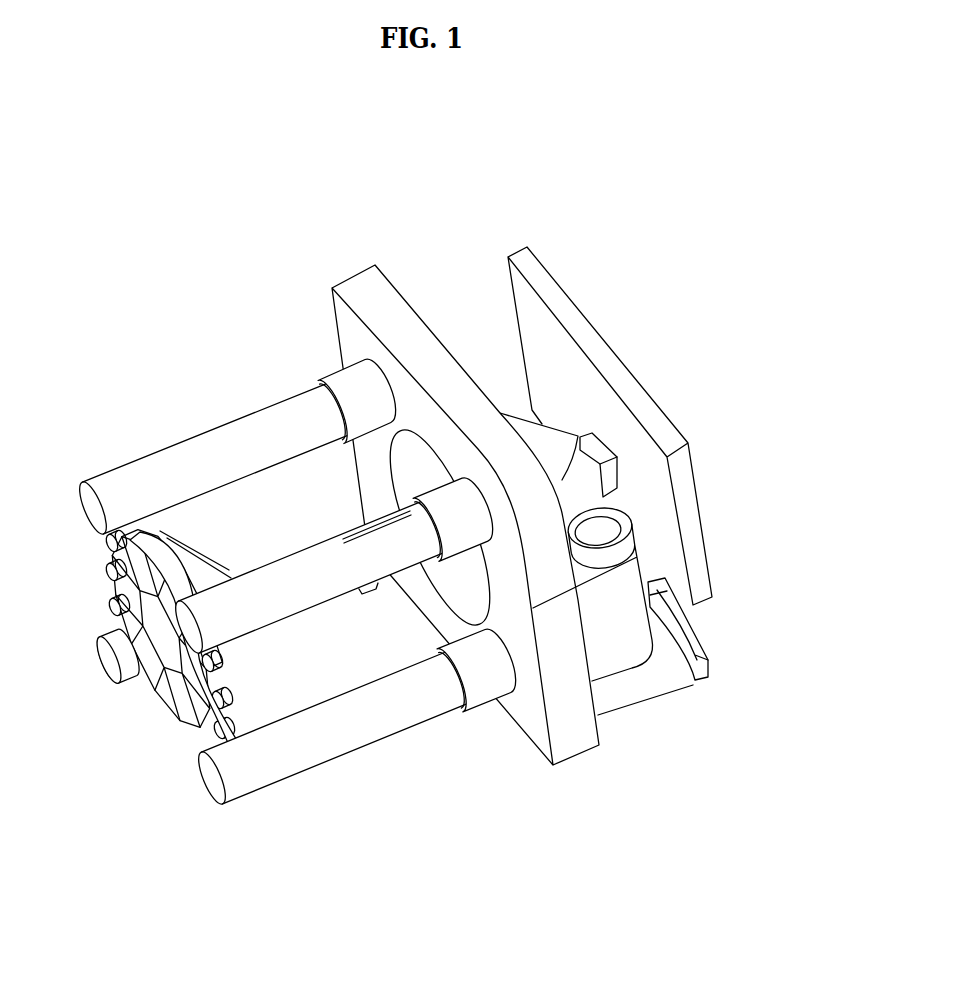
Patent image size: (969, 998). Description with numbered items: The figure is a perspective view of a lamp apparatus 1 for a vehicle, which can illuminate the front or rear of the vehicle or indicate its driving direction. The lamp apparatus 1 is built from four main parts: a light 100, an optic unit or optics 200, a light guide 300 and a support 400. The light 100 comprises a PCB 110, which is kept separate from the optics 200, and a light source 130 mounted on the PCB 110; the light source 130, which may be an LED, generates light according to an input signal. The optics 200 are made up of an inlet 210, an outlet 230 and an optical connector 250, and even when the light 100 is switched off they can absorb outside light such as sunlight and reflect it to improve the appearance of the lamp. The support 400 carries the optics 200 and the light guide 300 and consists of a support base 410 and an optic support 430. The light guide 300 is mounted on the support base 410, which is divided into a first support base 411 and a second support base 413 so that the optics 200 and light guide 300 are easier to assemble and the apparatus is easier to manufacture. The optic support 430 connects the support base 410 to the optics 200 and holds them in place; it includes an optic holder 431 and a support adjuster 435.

The lamp apparatus 1 is at (733, 146).
The light 100 is at (665, 463).
The PCB 110 is at (637, 392).
The light source 130 is at (613, 478).
The optics 200 is at (183, 550).
The inlet 210 is at (240, 575).
The outlet 230 is at (143, 650).
The optical connector 250 is at (158, 542).
The light guide 300 is at (552, 443).
The support 400 is at (444, 614).
The support base 410 is at (528, 564).
The first support base 411 is at (570, 722).
The second support base 413 is at (547, 570).
The optic support 430 is at (342, 636).
The optic holder 431 is at (288, 750).
The support adjuster 435 is at (472, 668).